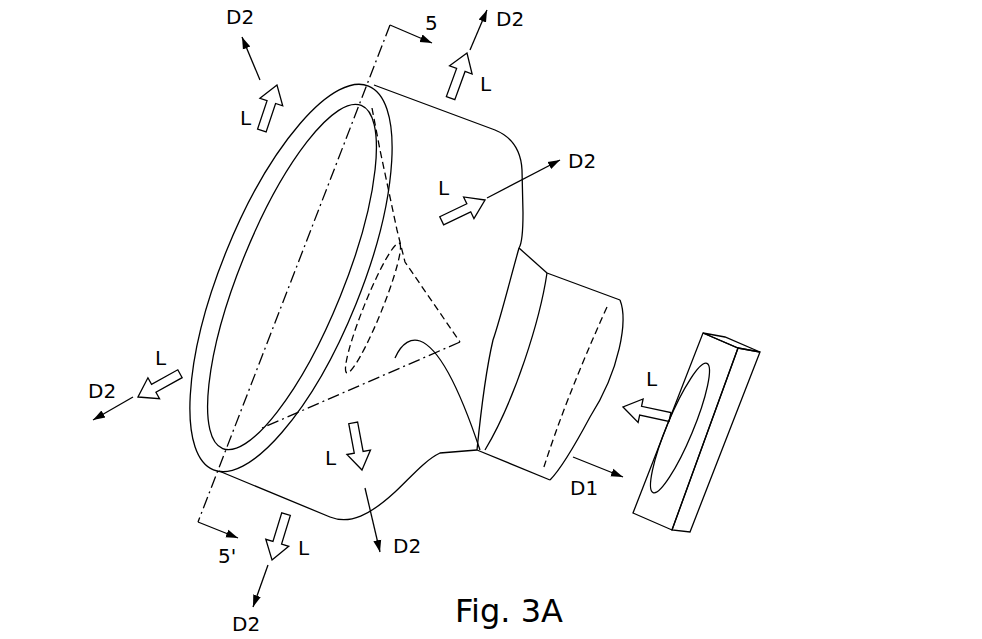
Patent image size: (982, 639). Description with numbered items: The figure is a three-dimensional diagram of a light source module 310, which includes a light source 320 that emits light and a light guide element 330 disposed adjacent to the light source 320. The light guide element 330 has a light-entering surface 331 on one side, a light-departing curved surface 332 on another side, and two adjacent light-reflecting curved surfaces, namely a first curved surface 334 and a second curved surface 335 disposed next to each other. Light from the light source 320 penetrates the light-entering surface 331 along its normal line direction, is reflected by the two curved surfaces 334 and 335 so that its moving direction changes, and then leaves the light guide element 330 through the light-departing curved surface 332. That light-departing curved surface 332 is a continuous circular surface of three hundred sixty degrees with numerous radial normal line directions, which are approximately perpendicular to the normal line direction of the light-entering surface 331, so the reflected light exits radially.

The light source module 310 is at (768, 99).
The light source 320 is at (730, 407).
The light guide element 330 is at (533, 253).
The light-entering surface 331 is at (627, 323).
The light-departing curved surface 332 is at (400, 418).
The first curved surface 334 is at (273, 297).
The second curved surface 335 is at (480, 450).